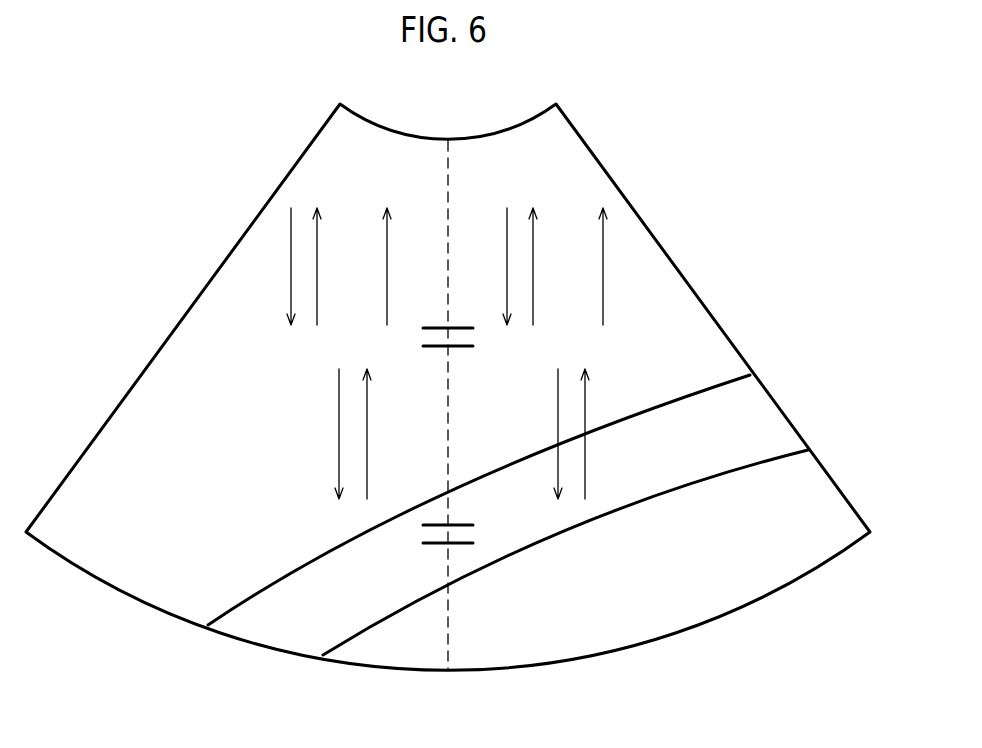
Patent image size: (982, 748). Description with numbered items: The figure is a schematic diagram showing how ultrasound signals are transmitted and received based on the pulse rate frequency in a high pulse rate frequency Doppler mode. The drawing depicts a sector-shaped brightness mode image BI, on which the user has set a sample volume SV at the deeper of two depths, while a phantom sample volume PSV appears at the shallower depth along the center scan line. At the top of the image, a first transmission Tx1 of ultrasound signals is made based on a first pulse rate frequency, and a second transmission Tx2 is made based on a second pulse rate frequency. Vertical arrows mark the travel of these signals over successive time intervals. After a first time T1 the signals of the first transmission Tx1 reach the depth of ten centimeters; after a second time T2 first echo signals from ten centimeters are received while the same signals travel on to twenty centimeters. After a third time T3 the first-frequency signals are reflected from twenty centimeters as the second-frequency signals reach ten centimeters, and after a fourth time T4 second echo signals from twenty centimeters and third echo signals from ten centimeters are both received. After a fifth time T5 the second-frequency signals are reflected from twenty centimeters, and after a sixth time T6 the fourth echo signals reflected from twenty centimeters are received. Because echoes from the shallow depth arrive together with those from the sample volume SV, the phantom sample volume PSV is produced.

The brightness mode image BI is at (706, 307).
The ultrasound signal transmission based on the first pulse rate frequency Tx1 is at (354, 143).
The ultrasound signal transmission based on the second pulse rate frequency Tx2 is at (554, 143).
The first time T1 is at (279, 266).
The second time T2 is at (328, 353).
The third time T3 is at (437, 353).
The fourth time T4 is at (475, 353).
The fifth time T5 is at (601, 434).
The sixth time T6 is at (618, 266).
The phantom sample volume PSV is at (458, 347).
The sample volume SV is at (427, 544).